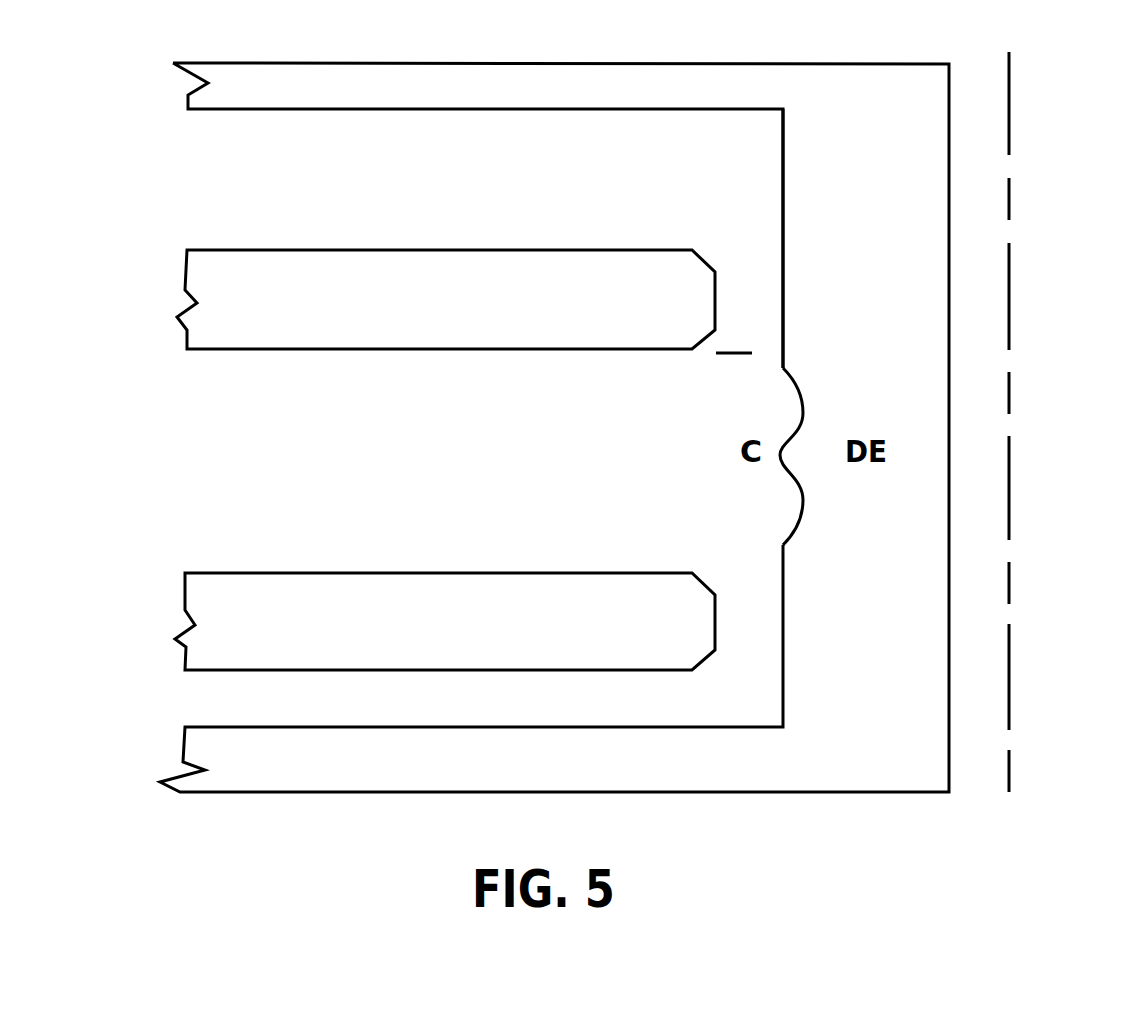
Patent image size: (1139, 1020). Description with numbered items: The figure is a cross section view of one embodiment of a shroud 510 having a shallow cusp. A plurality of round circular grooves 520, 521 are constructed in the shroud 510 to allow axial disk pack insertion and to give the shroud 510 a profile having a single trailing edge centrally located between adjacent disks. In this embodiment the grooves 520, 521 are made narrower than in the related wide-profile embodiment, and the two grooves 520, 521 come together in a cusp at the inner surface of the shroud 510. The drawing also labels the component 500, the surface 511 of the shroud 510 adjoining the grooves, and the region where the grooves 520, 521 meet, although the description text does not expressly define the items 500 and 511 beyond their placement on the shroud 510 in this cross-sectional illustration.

The dielectric member 500 is at (255, 367).
The shroud 510 is at (950, 253).
The inner wall 511 is at (783, 158).
The round circular groove 520 is at (790, 403).
The round circular groove 521 is at (790, 498).